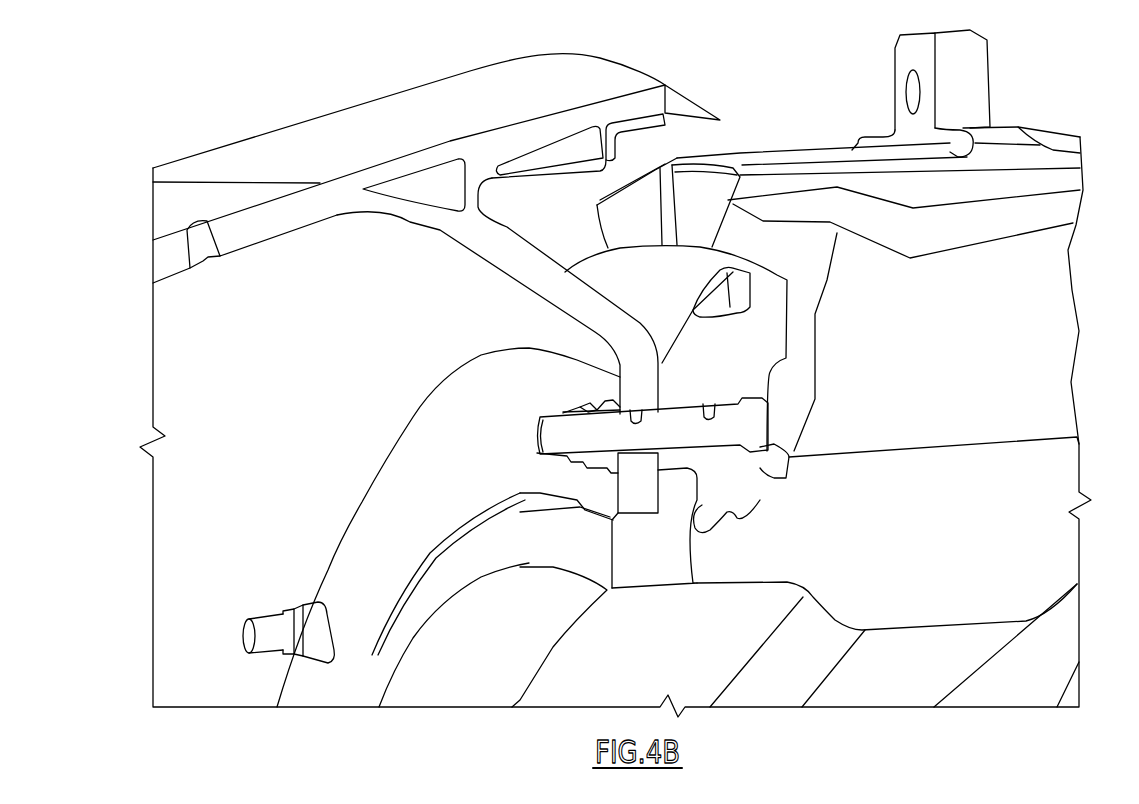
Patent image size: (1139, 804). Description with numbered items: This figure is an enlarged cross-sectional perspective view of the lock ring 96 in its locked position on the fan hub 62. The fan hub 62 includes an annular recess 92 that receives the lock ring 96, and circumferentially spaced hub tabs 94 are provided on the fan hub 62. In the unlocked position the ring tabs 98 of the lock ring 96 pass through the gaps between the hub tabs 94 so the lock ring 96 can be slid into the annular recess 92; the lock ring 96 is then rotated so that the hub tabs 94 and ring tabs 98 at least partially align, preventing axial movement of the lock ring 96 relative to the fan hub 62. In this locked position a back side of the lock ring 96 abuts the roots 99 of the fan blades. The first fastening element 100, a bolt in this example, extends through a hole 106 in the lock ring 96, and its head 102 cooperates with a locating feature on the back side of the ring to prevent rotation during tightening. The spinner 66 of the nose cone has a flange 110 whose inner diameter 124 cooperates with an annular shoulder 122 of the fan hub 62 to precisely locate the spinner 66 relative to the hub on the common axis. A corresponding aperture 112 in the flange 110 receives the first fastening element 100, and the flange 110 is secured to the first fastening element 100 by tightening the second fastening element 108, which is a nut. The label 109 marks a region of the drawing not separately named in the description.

The fan hub 62 is at (951, 550).
The spinner 66 is at (265, 222).
The annular recess 92 is at (728, 474).
The hub tabs 94 is at (673, 480).
The lock ring 96 is at (760, 500).
The ring tabs 98 is at (693, 585).
The roots 99 is at (948, 362).
The first fastening element 100 is at (682, 420).
The head 102 is at (787, 478).
The hole 106 is at (705, 406).
The second fastening element 108 is at (588, 403).
The case 109 is at (251, 496).
The flange 110 is at (490, 262).
The aperture 112 is at (631, 410).
The annular shoulder 122 is at (635, 517).
The inner diameter 124 is at (627, 522).